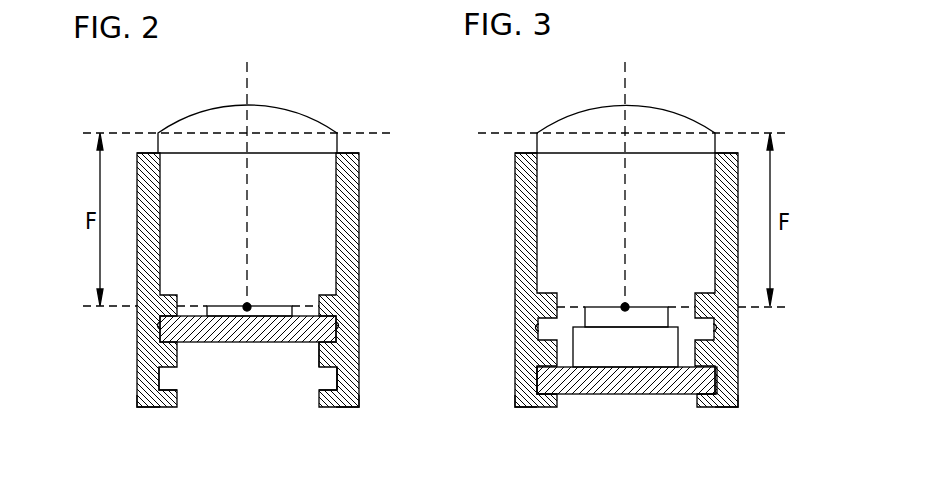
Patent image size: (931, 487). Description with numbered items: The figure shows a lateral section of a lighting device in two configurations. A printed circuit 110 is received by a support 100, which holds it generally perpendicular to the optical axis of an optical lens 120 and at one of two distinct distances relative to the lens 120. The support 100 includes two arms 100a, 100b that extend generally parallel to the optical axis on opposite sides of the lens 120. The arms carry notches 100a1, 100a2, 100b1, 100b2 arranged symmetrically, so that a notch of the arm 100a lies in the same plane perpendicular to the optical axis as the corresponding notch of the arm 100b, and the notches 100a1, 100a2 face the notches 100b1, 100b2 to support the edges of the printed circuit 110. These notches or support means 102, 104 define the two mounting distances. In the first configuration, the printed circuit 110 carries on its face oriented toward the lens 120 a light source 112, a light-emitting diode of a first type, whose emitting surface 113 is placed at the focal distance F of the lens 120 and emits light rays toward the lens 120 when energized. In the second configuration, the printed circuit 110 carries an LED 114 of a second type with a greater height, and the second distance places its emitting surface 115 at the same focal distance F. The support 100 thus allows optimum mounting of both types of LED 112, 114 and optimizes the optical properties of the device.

In FIG. 2, the support 100 is at (142, 357).
In FIG. 3, the support 100 is at (728, 353).
In FIG. 2, the arm 100a is at (138, 398).
In FIG. 3, the arm 100a is at (518, 398).
In FIG. 2, the notch 100a1 is at (165, 386).
In FIG. 3, the notch 100a1 is at (545, 387).
In FIG. 2, the notch 100a2 is at (159, 323).
In FIG. 3, the notch 100a2 is at (539, 316).
In FIG. 2, the arm 100b is at (357, 400).
In FIG. 3, the arm 100b is at (737, 397).
In FIG. 2, the notch 100b1 is at (332, 390).
In FIG. 3, the notch 100b1 is at (717, 390).
In FIG. 2, the notch 100b2 is at (336, 327).
In FIG. 3, the notch 100b2 is at (716, 323).
In FIG. 2, the support means 102 is at (304, 357).
In FIG. 2, the support means 104 is at (319, 385).
In FIG. 2, the printed circuit 110 is at (210, 342).
In FIG. 3, the printed circuit 110 is at (628, 383).
In FIG. 2, the light source 112 is at (293, 305).
In FIG. 2, the emitting surface 113 is at (212, 305).
In FIG. 3, the LED 114 is at (645, 357).
In FIG. 3, the emitting surface 115 is at (595, 305).
In FIG. 2, the optical lens 120 is at (287, 117).
In FIG. 3, the optical lens 120 is at (665, 117).